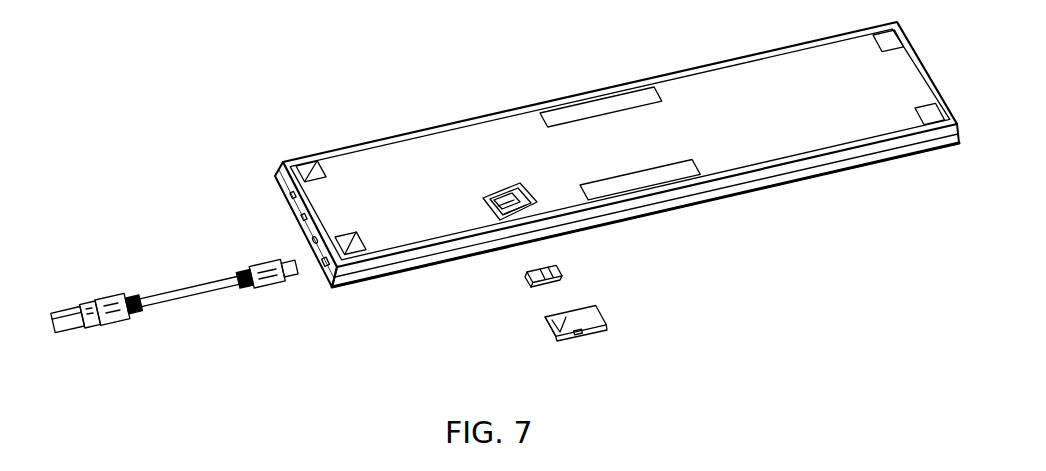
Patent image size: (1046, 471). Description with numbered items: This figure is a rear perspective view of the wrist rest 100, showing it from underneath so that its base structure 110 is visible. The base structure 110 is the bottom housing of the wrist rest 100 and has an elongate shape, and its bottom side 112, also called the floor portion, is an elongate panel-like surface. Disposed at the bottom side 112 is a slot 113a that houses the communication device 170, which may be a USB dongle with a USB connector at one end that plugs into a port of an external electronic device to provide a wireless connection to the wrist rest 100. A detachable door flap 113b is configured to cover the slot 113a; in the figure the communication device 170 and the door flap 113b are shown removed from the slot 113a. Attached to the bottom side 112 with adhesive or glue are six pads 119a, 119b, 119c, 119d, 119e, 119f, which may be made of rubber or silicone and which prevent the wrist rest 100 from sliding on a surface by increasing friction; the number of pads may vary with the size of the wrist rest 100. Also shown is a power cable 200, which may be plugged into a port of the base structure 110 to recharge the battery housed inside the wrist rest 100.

The wrist rest 100 is at (496, 102).
The base structure 110 is at (833, 170).
The bottom side 112 is at (737, 162).
The slot 113a is at (532, 205).
The detachable door flap 113b is at (558, 330).
The pad 119a is at (328, 158).
The pad 119b is at (571, 108).
The pad 119c is at (877, 38).
The pad 119d is at (353, 247).
The pad 119e is at (617, 187).
The pad 119f is at (925, 125).
The communication device 170 is at (527, 279).
The power cable 200 is at (180, 272).